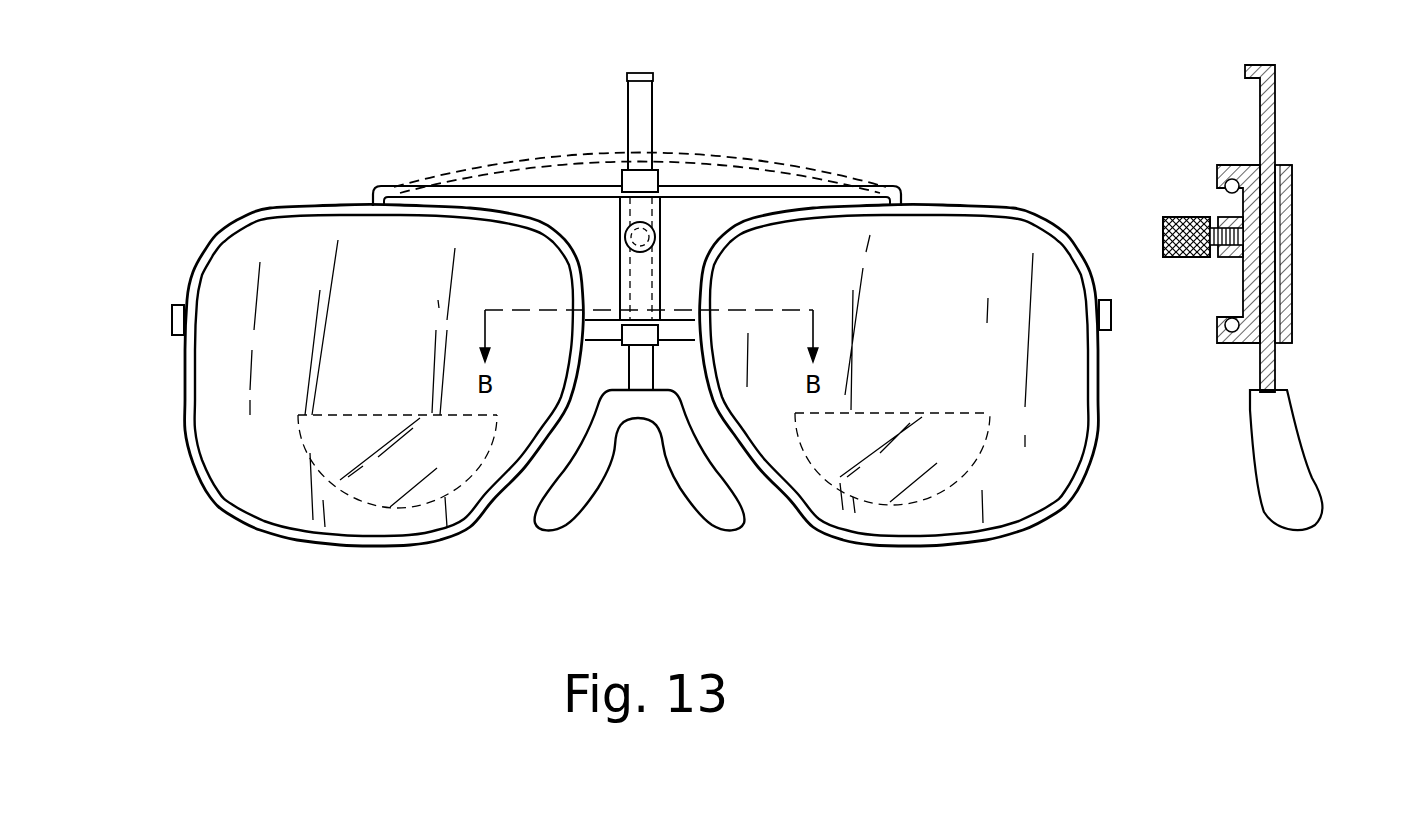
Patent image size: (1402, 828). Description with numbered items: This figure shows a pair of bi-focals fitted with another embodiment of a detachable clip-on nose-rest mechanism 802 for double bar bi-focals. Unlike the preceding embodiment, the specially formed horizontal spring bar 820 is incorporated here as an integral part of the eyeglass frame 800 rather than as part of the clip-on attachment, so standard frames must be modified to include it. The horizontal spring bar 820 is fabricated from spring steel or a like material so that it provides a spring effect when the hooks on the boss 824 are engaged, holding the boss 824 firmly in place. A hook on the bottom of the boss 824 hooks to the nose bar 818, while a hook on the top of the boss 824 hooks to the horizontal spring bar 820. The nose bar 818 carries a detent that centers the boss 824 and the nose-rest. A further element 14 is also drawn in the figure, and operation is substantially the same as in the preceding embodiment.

The eyeglass frame 800 is at (184, 426).
The detachable clip-on nose-rest mechanism 802 is at (368, 188).
The horizontal spring bar 820 is at (729, 188).
The boss 824 is at (619, 259).
The pivot 14 is at (656, 232).
The nose bar 818 is at (672, 341).